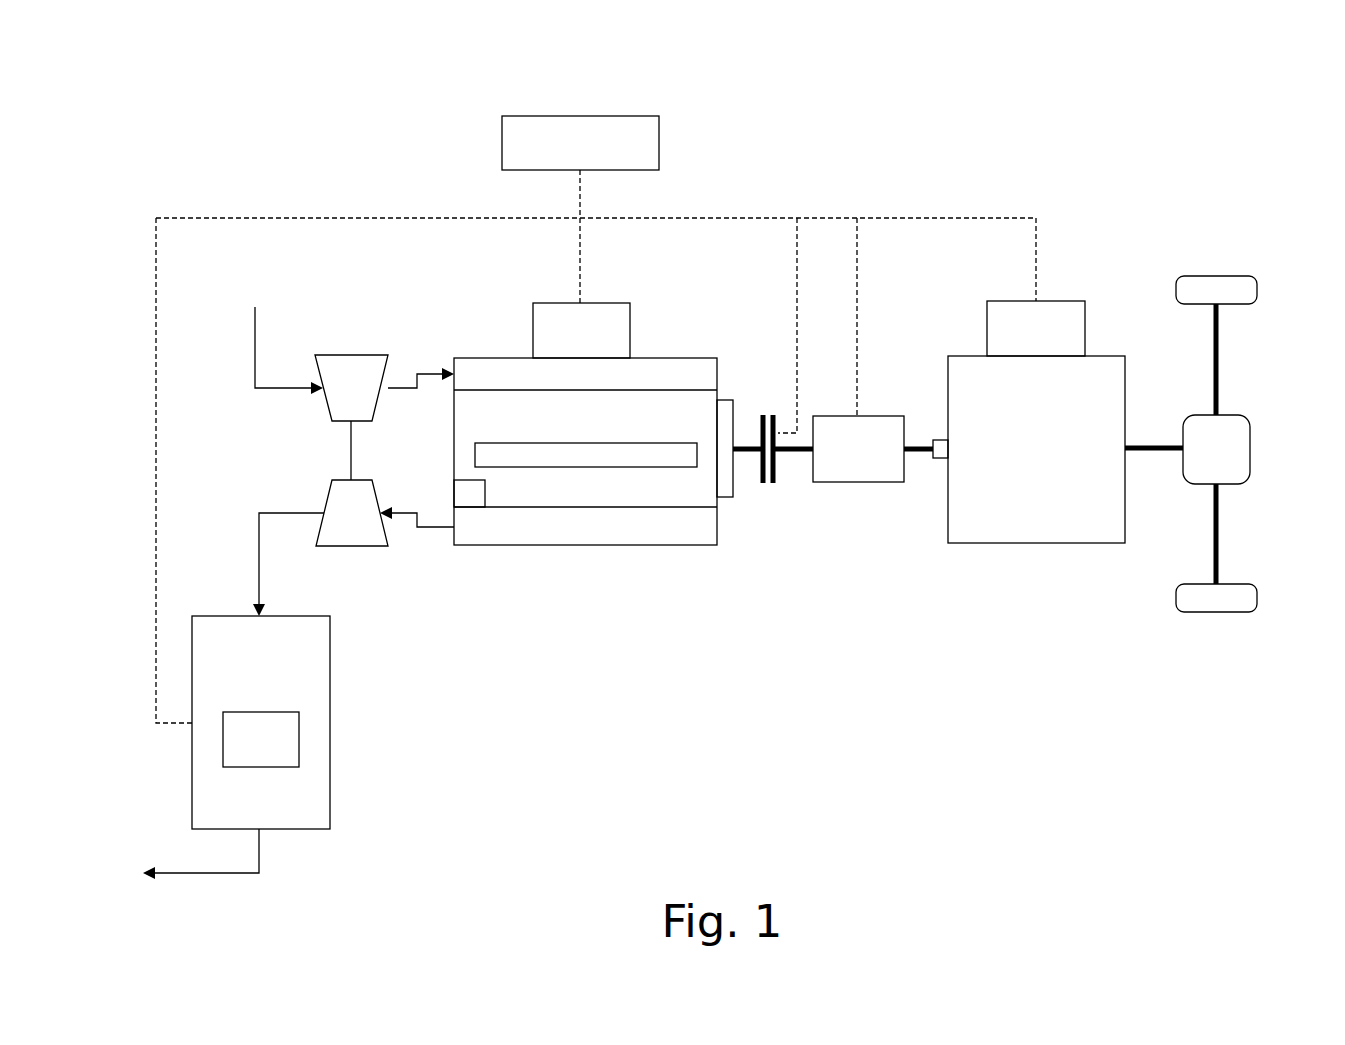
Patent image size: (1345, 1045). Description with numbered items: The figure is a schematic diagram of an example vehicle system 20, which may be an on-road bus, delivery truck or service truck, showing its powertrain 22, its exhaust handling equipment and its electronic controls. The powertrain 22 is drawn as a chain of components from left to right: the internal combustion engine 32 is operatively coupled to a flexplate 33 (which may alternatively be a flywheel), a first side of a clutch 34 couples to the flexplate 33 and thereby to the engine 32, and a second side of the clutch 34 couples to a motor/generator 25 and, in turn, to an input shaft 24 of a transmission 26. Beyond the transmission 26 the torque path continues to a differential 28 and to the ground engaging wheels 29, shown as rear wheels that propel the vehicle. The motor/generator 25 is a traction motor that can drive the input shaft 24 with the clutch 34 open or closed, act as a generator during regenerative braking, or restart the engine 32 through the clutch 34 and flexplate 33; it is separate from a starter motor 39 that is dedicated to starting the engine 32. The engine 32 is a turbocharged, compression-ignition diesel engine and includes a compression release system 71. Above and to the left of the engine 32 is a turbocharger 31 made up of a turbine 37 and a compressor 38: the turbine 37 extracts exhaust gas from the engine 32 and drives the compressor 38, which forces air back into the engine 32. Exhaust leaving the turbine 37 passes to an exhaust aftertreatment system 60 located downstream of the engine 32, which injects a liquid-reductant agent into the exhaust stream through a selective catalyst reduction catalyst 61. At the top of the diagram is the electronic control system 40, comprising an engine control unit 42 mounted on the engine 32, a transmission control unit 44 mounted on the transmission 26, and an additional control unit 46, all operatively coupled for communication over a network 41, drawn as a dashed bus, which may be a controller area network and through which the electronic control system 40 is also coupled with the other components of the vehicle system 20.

The vehicle system 20 is at (1079, 68).
The powertrain 22 is at (739, 700).
The input shaft 24 is at (940, 440).
The motor/generator 25 is at (857, 482).
The transmission 26 is at (1037, 543).
The differential 28 is at (1250, 450).
The ground engaging wheels 29 is at (1240, 276).
The turbocharger 31 is at (320, 448).
The internal combustion engine 32 is at (454, 450).
The flexplate 33 is at (727, 497).
The clutch 34 is at (776, 470).
The turbine 37 is at (349, 546).
The compressor 38 is at (350, 355).
The starter motor 39 is at (485, 493).
The electronic control system 40 is at (801, 139).
The network 41 is at (665, 218).
The engine control unit 42 is at (533, 333).
The transmission control unit 44 is at (1085, 330).
The additional control unit 46 is at (502, 142).
The exhaust aftertreatment system 60 is at (330, 715).
The selective catalyst reduction catalyst 61 is at (262, 712).
The compression release system 71 is at (519, 443).